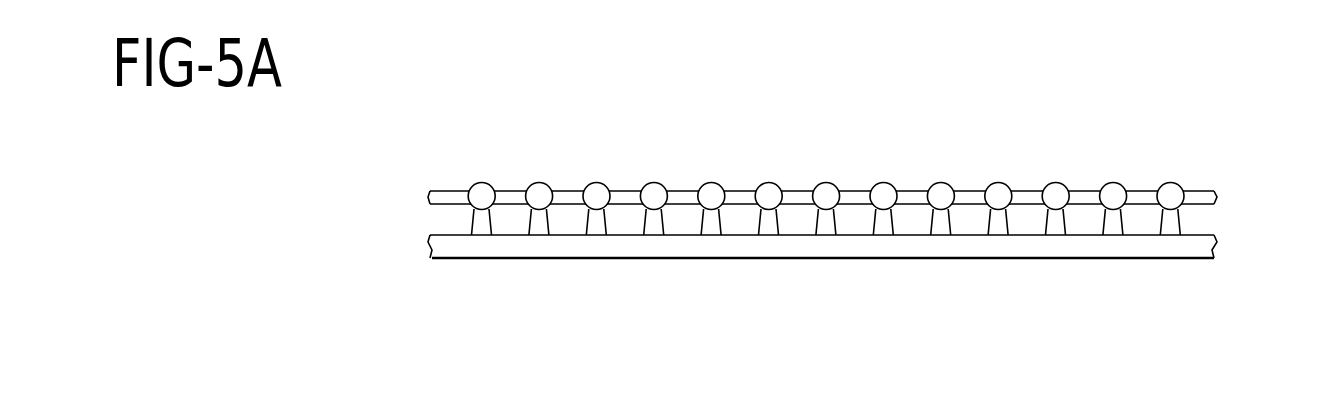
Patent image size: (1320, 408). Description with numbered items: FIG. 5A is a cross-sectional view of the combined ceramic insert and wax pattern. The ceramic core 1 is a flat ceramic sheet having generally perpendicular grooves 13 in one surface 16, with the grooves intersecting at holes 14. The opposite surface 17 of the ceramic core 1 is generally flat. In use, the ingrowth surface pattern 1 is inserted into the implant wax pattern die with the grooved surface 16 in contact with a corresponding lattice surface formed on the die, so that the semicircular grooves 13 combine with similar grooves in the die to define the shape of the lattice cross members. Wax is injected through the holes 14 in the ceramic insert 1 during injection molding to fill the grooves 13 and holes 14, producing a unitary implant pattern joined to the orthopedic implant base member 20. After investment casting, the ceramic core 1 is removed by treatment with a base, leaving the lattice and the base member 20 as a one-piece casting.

The ceramic core 1 is at (842, 206).
The grooves 13 is at (1170, 197).
The holes 14 is at (1175, 223).
The surface 16 is at (568, 198).
The surface 17 is at (634, 235).
The orthopedic implant base member 20 is at (1024, 258).